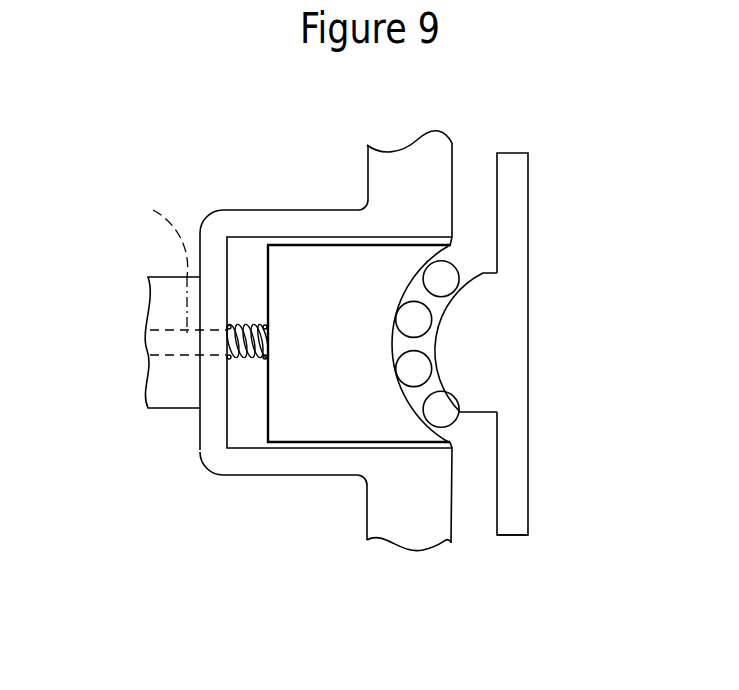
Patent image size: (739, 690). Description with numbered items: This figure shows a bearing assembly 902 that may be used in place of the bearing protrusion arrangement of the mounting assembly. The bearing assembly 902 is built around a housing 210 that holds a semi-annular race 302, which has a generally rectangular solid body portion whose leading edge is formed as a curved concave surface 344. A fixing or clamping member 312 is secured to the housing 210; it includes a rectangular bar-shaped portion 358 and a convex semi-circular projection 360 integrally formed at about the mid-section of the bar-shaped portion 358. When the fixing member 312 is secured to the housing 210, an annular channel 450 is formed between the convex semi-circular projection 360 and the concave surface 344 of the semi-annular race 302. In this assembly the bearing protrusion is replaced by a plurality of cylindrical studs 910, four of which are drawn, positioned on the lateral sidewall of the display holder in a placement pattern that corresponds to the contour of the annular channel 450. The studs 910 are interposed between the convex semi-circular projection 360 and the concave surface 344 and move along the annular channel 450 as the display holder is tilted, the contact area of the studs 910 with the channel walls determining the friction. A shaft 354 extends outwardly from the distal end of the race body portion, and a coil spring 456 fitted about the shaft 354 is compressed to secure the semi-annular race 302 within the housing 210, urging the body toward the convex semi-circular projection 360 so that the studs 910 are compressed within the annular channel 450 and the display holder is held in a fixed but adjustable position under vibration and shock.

The housing 210 is at (405, 177).
The semi-annular race 302 is at (298, 432).
The fixing member 312 is at (508, 225).
The concave surface 344 is at (423, 288).
The shaft 354 is at (174, 296).
The bar-shaped portion 358 is at (513, 494).
The convex semi-circular projection 360 is at (462, 341).
The annular channel 450 is at (471, 436).
The coil spring 456 is at (252, 363).
The bearing assembly 902 is at (366, 127).
The cylindrical studs 910 is at (453, 272).